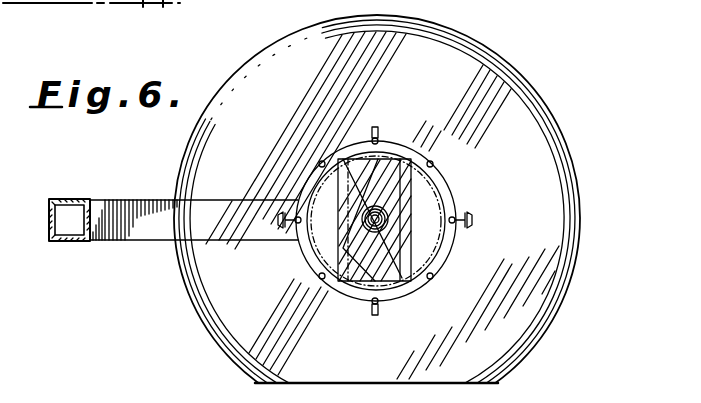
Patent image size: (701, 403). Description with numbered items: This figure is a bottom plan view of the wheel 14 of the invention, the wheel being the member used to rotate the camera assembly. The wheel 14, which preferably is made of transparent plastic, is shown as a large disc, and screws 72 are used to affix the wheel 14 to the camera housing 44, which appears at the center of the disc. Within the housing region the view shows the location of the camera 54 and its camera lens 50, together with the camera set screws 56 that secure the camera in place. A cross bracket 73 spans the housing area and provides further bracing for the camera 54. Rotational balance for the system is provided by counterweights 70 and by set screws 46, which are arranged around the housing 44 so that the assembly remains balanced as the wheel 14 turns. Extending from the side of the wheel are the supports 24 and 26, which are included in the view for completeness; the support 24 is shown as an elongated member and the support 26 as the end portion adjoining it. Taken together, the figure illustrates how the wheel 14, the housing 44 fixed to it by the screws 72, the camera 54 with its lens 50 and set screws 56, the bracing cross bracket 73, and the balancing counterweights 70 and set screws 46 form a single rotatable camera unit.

The wheel 14 is at (486, 82).
The support 24 is at (147, 212).
The support 26 is at (69, 199).
The camera housing 44 is at (421, 159).
The set screws 46 is at (294, 214).
The camera lens 50 is at (389, 234).
The camera 54 is at (393, 199).
The camera set screws 56 is at (380, 127).
The counterweights 70 is at (325, 192).
The screws 72 is at (326, 160).
The cross bracket 73 is at (390, 263).